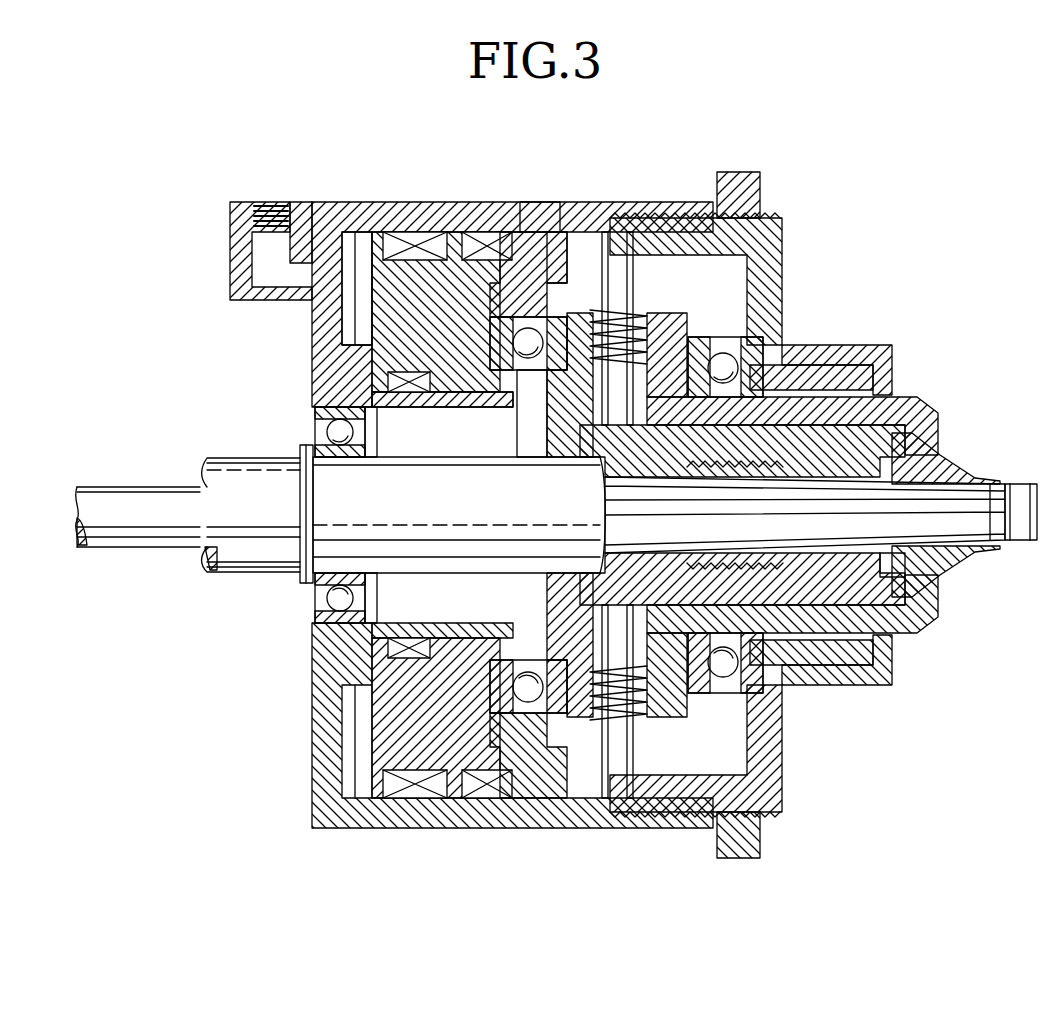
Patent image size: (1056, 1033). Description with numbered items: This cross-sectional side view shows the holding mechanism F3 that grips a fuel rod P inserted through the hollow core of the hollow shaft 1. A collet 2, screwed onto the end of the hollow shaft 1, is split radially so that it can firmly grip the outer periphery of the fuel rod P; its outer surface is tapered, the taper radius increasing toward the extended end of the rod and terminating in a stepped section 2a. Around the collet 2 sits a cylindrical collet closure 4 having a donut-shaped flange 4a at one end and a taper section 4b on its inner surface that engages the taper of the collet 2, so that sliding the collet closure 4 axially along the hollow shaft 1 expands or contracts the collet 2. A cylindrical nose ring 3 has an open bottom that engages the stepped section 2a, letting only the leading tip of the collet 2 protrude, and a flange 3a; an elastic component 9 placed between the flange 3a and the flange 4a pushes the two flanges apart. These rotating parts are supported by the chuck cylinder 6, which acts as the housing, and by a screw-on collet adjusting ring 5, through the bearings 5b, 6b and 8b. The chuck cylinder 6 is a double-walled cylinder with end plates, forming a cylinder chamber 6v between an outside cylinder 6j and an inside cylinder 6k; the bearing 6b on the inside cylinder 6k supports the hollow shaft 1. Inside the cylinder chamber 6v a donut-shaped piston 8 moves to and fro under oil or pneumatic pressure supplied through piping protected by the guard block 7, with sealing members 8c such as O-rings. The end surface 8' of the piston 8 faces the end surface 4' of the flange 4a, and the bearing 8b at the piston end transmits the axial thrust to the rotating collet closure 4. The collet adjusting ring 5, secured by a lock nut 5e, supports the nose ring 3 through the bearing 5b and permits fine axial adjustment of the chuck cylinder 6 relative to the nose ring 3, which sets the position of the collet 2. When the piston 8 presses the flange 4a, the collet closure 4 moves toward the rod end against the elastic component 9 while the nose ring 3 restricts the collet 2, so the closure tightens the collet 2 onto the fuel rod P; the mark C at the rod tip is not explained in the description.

The hollow shaft 1 is at (265, 550).
The collet 2 is at (950, 467).
The stepped section 2a is at (947, 557).
The nose ring 3 is at (905, 402).
The flange 3a is at (667, 313).
The collet closure 4 is at (726, 510).
The flange 4a is at (580, 312).
The taper section 4b is at (893, 622).
The end surface 4' is at (500, 413).
The collet adjusting ring 5 is at (782, 247).
The bearing 5b is at (755, 342).
The lock nut 5e is at (767, 180).
The chuck cylinder 6 is at (578, 202).
The bearing 6b is at (315, 420).
The outside cylinder 6j is at (536, 212).
The inside cylinder 6k is at (378, 407).
The cylinder chamber 6v is at (355, 232).
The guard block 7 is at (232, 248).
The piston 8 is at (436, 468).
The bearing 8b is at (513, 313).
The sealing member 8c is at (480, 250).
The end surface 8' is at (593, 195).
The elastic component 9 is at (608, 300).
The fuel rod P is at (993, 523).
The end cap C is at (1023, 530).
The holding mechanism F3 is at (917, 235).